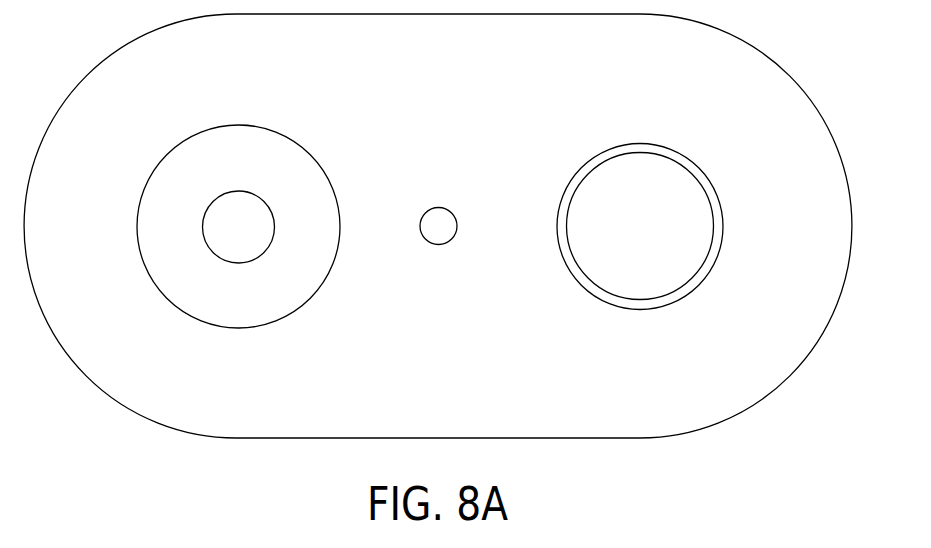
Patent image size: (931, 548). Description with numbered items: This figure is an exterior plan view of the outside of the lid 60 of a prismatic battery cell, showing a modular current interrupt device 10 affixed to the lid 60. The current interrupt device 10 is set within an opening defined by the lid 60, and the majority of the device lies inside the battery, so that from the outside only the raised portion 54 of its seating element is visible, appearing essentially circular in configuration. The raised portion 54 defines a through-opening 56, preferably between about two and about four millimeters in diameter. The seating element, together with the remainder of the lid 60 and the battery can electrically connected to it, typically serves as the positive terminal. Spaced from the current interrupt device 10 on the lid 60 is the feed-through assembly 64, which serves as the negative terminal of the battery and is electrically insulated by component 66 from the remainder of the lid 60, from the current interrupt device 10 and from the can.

The current interrupt device 10 is at (157, 164).
The raised portion 54 is at (210, 179).
The through-opening 56 is at (252, 239).
The lid 60 is at (452, 124).
The feed-through assembly 64 is at (650, 236).
The component 66 is at (703, 272).